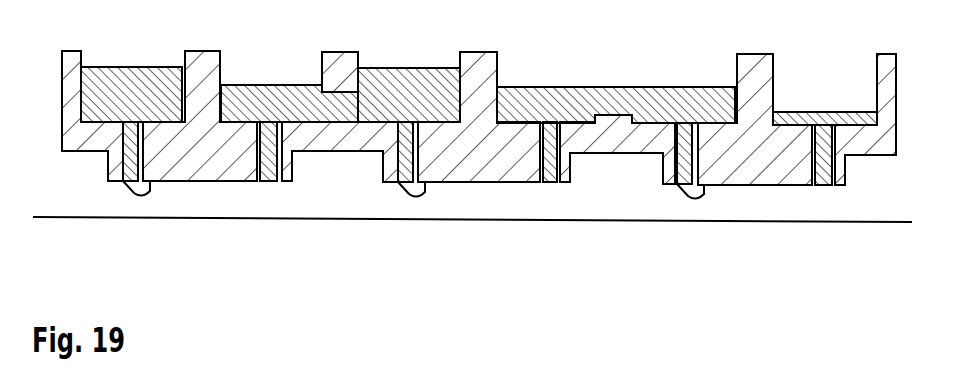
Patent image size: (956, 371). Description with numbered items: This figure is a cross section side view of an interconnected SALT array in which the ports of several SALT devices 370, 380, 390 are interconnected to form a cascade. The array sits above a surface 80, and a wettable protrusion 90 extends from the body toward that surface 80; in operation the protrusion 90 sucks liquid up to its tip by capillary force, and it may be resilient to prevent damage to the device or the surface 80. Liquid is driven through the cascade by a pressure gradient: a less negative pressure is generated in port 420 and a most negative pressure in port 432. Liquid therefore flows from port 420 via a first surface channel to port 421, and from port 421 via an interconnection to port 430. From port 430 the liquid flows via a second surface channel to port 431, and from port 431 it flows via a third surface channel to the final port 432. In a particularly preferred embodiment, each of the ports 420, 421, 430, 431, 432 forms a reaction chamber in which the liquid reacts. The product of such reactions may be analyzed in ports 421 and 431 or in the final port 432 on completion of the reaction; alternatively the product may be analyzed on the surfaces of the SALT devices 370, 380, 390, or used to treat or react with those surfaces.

The surface 80 is at (98, 215).
The protrusion 90 is at (153, 187).
The SALT device 370 is at (230, 157).
The SALT device 380 is at (528, 158).
The SALT device 390 is at (778, 162).
The port 420 is at (132, 76).
The port 421 is at (268, 88).
The port 430 is at (406, 80).
The port 431 is at (612, 93).
The port 432 is at (818, 112).